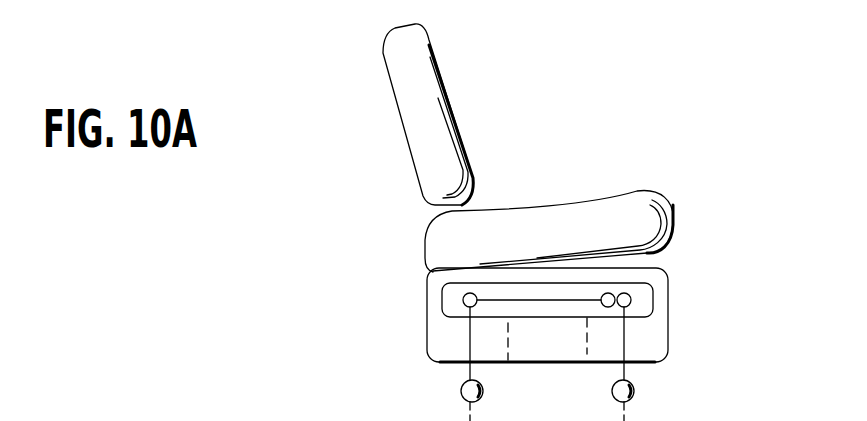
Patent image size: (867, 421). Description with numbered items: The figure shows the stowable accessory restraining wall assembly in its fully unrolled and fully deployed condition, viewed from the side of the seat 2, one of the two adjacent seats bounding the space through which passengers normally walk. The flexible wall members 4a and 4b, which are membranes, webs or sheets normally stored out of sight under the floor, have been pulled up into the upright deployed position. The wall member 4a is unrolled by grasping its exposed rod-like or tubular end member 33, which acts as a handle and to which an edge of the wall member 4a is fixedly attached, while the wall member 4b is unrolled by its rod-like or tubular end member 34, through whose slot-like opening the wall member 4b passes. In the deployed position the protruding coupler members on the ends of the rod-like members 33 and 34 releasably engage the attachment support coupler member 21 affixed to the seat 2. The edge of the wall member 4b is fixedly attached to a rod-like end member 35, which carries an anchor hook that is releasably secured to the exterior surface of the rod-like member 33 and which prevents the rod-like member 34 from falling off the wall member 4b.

The seat 2 is at (696, 192).
The wall member 4a is at (626, 334).
The wall member 4b is at (552, 300).
The coupler member 21 is at (450, 307).
The rod-like or tubular end member 33 is at (625, 293).
The rod-like or tubular end member 34 is at (440, 288).
The rod-like end member 35 is at (613, 292).